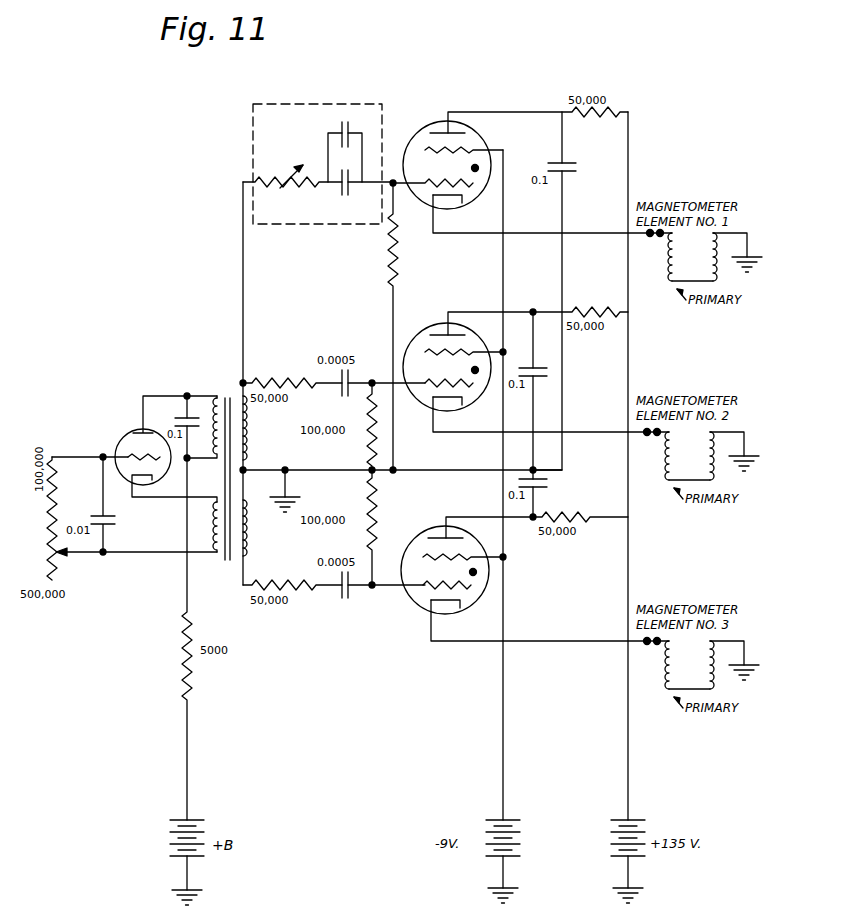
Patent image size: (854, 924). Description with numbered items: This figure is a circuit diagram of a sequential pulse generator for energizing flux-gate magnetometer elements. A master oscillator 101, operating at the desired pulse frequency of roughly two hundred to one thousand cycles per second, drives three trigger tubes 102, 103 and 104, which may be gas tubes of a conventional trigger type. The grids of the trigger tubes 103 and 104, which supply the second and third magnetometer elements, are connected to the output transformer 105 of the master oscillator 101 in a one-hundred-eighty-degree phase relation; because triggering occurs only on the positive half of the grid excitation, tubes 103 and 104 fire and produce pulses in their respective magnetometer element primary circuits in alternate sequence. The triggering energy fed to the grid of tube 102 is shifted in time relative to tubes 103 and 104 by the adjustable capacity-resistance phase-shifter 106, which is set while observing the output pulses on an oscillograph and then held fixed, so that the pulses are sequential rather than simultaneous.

The master oscillator 101 is at (121, 440).
The trigger tube 102 is at (421, 130).
The trigger tube 103 is at (418, 330).
The trigger tube 104 is at (416, 541).
The output transformer 105 is at (227, 393).
The adjustable capacity-resistance phase-shifter 106 is at (308, 103).